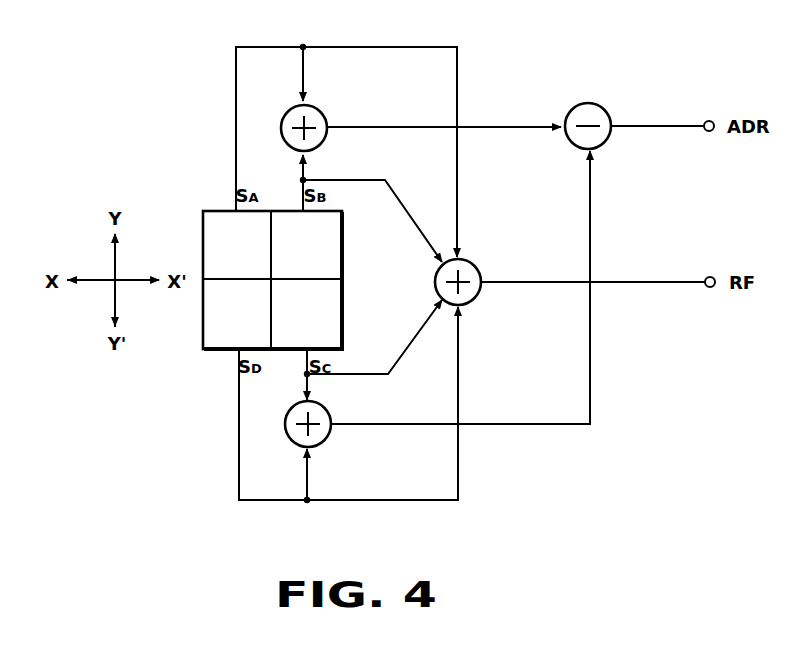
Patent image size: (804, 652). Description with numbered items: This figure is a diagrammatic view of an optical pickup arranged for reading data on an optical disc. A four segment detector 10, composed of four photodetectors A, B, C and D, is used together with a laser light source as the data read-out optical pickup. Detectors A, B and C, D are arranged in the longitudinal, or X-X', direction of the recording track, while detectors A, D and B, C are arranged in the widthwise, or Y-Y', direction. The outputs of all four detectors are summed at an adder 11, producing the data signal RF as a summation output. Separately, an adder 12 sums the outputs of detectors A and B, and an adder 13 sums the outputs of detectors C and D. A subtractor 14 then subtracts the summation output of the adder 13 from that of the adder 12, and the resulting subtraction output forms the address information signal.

The four segment detector 10 is at (191, 210).
The adder 11 is at (471, 302).
The adder 12 is at (323, 112).
The adder 13 is at (324, 441).
The subtractor 14 is at (585, 102).